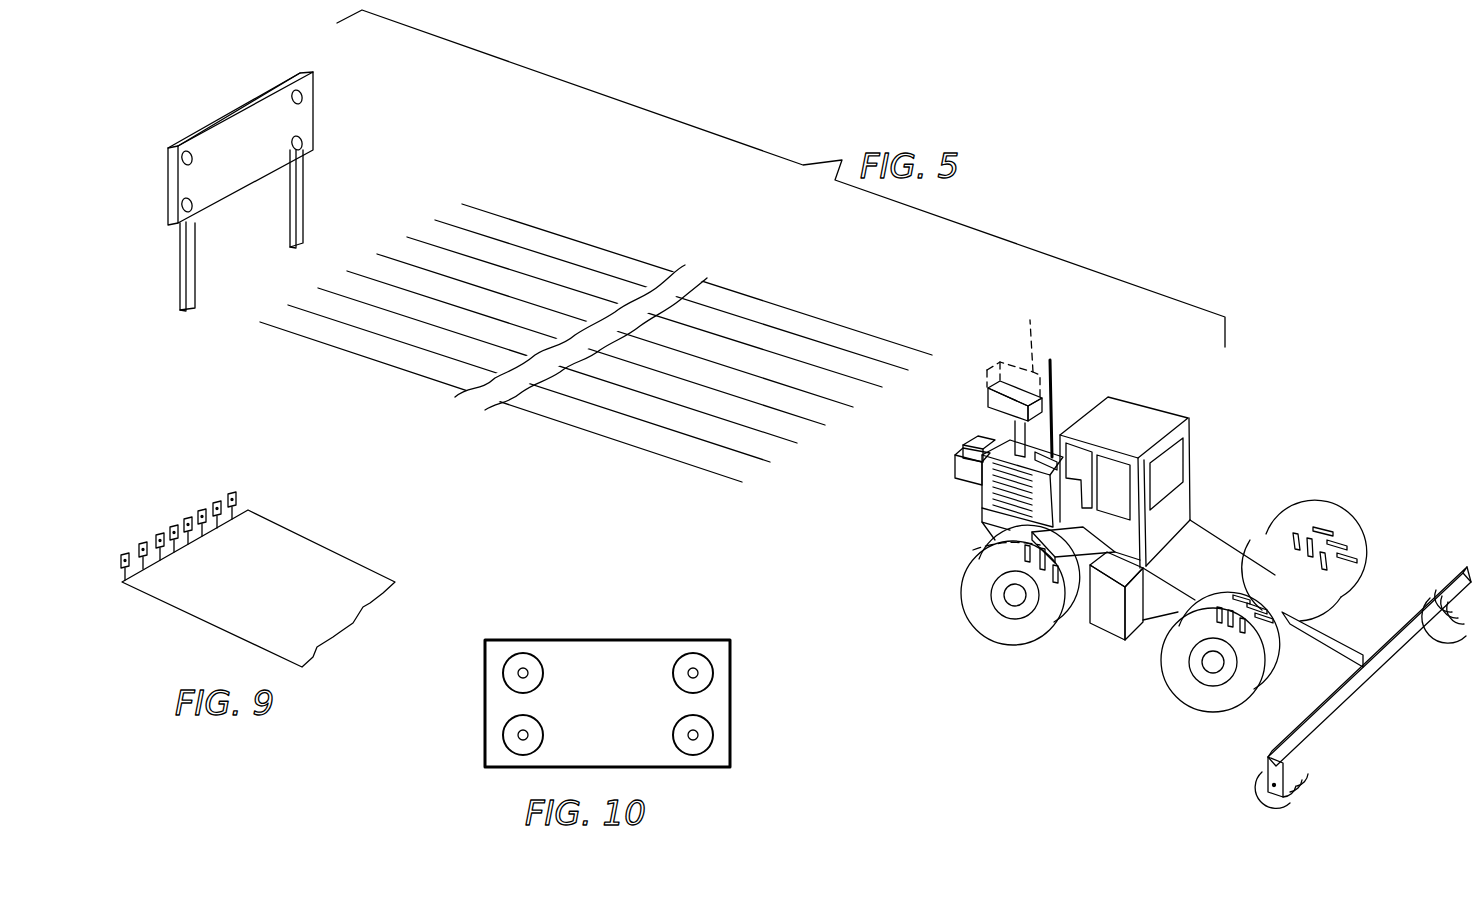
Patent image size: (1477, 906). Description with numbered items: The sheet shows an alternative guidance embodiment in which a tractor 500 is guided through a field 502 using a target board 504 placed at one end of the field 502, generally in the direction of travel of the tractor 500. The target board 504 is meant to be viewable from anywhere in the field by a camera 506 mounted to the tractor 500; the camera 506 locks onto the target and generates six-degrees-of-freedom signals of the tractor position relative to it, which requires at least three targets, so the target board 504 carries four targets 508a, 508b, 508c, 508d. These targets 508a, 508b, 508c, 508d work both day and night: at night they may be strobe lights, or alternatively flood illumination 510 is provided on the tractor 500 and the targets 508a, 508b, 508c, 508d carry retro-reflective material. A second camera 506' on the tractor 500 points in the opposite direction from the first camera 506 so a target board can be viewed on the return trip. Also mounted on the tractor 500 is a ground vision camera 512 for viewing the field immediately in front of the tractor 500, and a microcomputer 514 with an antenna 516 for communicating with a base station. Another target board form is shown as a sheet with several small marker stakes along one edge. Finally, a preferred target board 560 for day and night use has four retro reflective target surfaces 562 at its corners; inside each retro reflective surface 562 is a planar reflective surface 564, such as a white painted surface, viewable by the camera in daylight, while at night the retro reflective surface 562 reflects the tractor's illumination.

In FIG. 5, the tractor 500 is at (1190, 564).
In FIG. 5, the field 502 is at (522, 222).
In FIG. 5, the target board 504 is at (312, 84).
In FIG. 5, the camera 506 is at (989, 419).
In FIG. 5, the second camera 506' is at (1013, 360).
In FIG. 5, the target 508a is at (186, 150).
In FIG. 5, the target 508b is at (296, 90).
In FIG. 5, the target 508c is at (303, 143).
In FIG. 5, the target 508d is at (189, 212).
In FIG. 5, the flood illumination 510 is at (967, 453).
In FIG. 5, the ground vision camera 512 is at (975, 433).
In FIG. 5, the microcomputer 514 is at (1060, 440).
In FIG. 5, the antenna 516 is at (1053, 368).
In FIG. 10, the target board 560 is at (732, 708).
In FIG. 10, the retro reflective target surface 562 is at (530, 683).
In FIG. 10, the planar reflective surface 564 is at (518, 673).